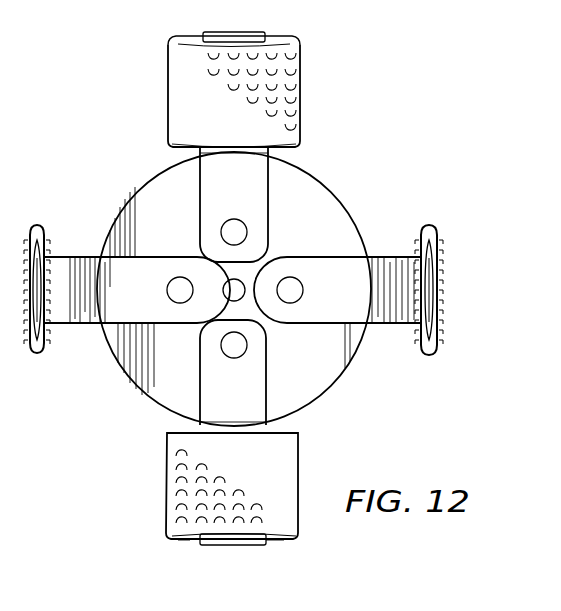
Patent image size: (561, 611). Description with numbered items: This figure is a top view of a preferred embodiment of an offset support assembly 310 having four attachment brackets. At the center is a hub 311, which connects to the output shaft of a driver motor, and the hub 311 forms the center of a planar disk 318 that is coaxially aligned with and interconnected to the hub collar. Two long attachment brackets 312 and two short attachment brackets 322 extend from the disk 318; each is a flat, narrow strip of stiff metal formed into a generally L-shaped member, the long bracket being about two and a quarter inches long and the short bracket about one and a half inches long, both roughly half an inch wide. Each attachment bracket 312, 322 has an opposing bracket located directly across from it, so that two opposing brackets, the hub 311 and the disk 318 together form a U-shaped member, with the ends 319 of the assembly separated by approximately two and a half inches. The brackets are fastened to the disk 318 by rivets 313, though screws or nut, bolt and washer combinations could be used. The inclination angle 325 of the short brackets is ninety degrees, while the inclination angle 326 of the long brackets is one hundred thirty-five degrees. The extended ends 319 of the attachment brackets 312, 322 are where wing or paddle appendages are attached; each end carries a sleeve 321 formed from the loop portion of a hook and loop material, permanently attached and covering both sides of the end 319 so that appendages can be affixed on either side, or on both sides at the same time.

The offset support assembly 310 is at (348, 72).
The hub 311 is at (223, 283).
The attachment bracket 312 is at (102, 256).
The rivet 313 is at (230, 220).
The planar disk 318 is at (325, 190).
The extended end of attachment bracket 319 is at (432, 288).
The sleeve 321 is at (265, 288).
The attachment bracket 322 is at (200, 198).
The inclination angle 325 is at (46, 324).
The inclination angle 326 is at (282, 408).